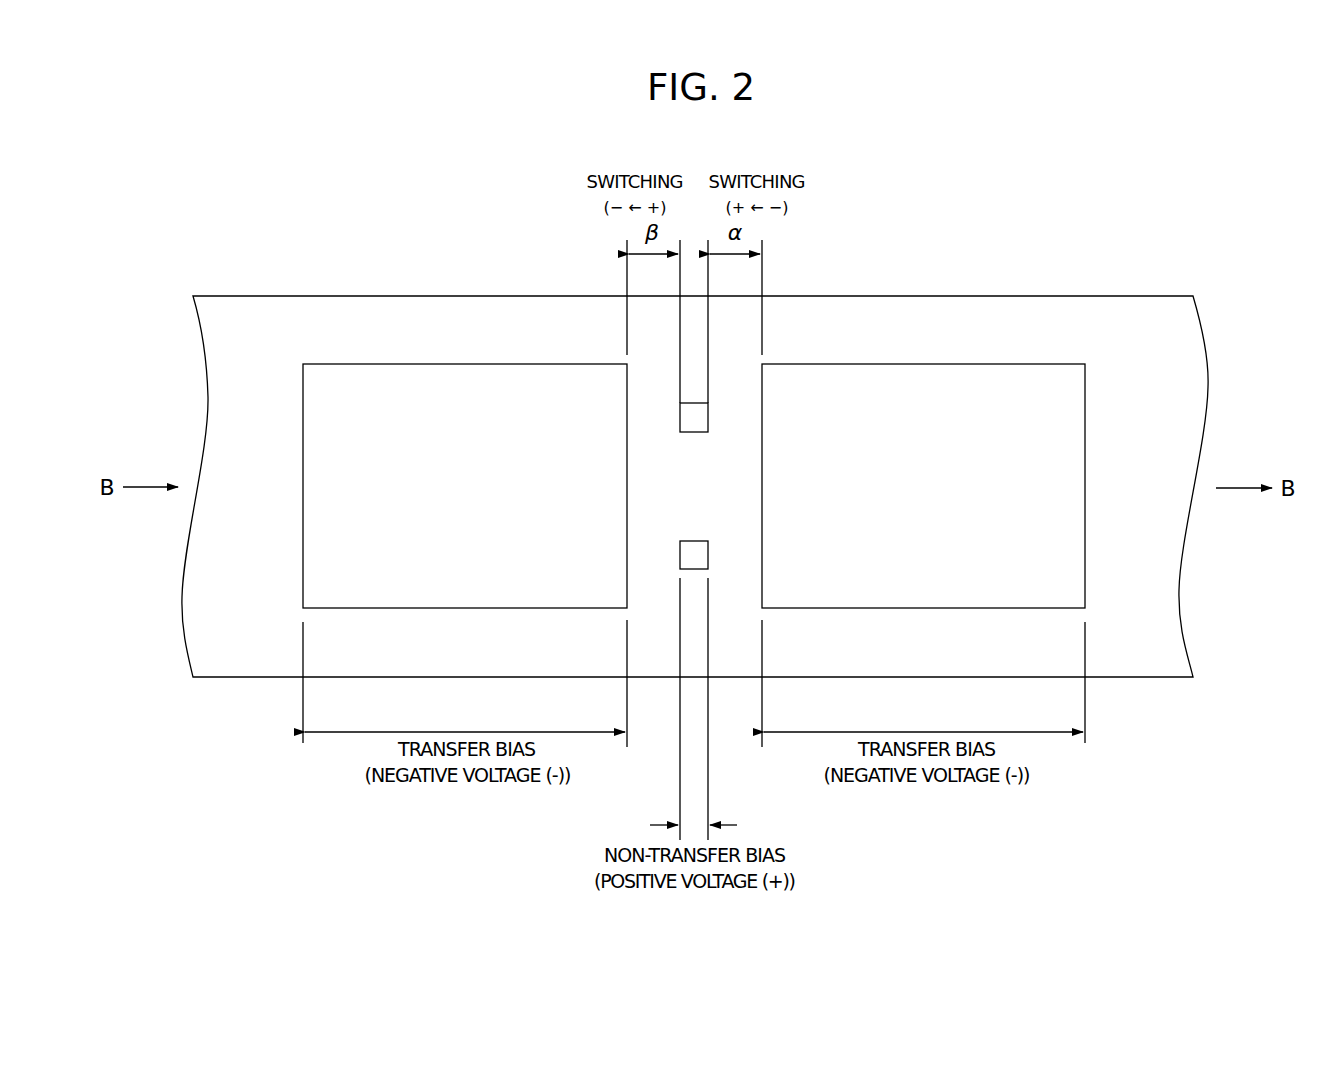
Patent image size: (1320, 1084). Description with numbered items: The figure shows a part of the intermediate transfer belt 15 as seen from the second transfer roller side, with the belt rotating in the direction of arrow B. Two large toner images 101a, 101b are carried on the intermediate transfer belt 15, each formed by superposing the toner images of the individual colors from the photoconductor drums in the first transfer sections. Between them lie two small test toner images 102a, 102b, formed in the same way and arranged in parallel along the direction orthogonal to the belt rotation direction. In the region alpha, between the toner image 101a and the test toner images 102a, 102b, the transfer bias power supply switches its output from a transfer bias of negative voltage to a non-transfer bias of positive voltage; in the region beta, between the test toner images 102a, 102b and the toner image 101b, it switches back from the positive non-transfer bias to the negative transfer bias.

The intermediate transfer belt 15 is at (1105, 296).
The toner image 101a is at (950, 364).
The toner image 101b is at (452, 364).
The test toner image 102a is at (695, 402).
The test toner image 102b is at (695, 569).